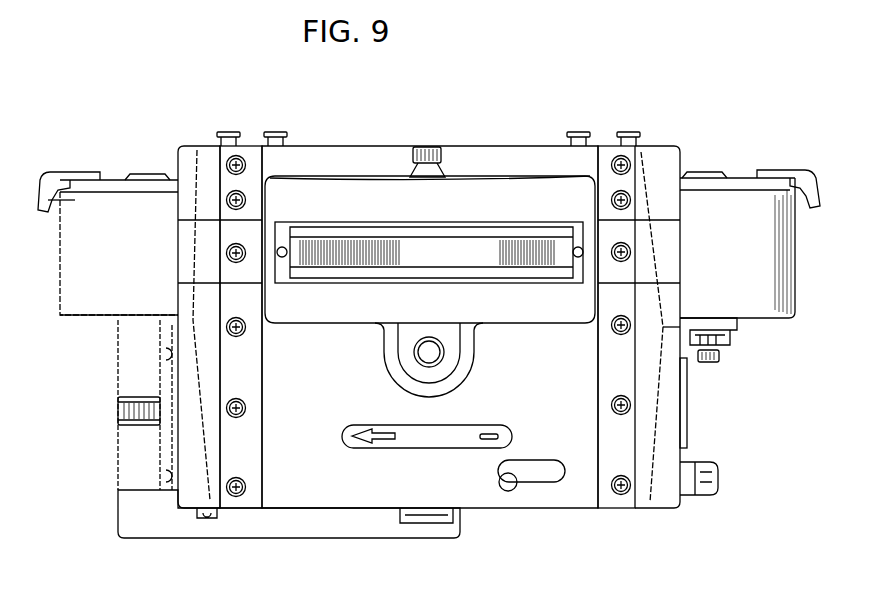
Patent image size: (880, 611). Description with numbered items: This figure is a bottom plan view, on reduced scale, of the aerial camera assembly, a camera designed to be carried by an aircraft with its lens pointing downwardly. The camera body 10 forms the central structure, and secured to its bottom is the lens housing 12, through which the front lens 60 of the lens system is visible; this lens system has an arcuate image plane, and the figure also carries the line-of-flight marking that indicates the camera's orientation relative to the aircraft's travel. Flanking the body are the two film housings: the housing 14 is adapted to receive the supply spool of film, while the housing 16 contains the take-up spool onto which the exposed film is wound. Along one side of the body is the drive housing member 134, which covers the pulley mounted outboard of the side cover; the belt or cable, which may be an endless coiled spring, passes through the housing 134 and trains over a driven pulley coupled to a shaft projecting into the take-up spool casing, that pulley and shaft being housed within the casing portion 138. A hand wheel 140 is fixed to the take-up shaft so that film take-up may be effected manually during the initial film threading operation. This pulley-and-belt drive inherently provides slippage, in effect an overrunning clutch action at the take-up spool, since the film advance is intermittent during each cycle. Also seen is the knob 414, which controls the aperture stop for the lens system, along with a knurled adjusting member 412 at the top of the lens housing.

The camera body 10 is at (604, 514).
The lens housing 12 is at (346, 328).
The housing 14 is at (803, 257).
The housing 16 is at (66, 322).
The front lens 60 is at (432, 248).
The drive housing member 134 is at (297, 525).
The casing portion 138 is at (133, 462).
The hand wheel 140 is at (133, 408).
The knurled adjusting knob 412 is at (433, 147).
The knob 414 is at (432, 352).